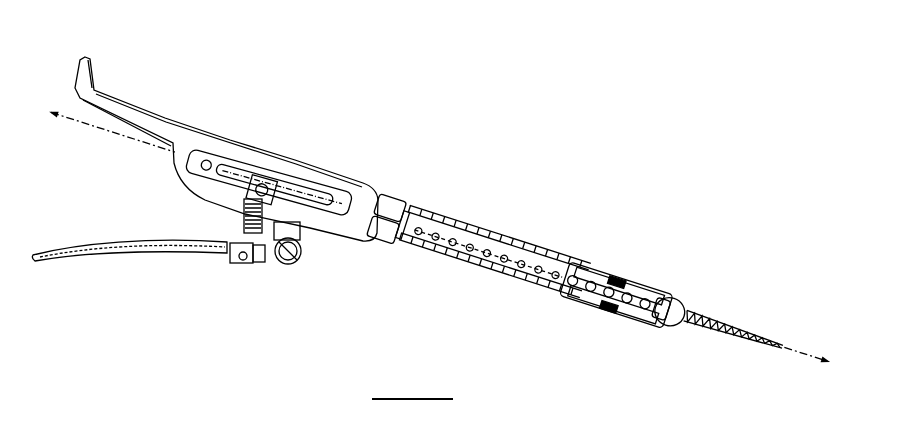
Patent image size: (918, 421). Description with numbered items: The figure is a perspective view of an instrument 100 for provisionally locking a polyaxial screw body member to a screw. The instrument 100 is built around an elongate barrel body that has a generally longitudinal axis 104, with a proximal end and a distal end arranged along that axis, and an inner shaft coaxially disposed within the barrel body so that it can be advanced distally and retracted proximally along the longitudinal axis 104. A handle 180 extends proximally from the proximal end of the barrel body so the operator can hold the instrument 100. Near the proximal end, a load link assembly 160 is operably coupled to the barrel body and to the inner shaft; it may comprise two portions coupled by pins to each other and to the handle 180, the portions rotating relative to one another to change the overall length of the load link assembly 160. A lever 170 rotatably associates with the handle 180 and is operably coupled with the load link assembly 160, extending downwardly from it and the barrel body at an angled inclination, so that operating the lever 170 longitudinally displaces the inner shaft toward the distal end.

The instrument 100 is at (618, 66).
The longitudinal axis 104 is at (97, 127).
The load link assembly 160 is at (248, 180).
The lever 170 is at (153, 252).
The handle 180 is at (192, 134).